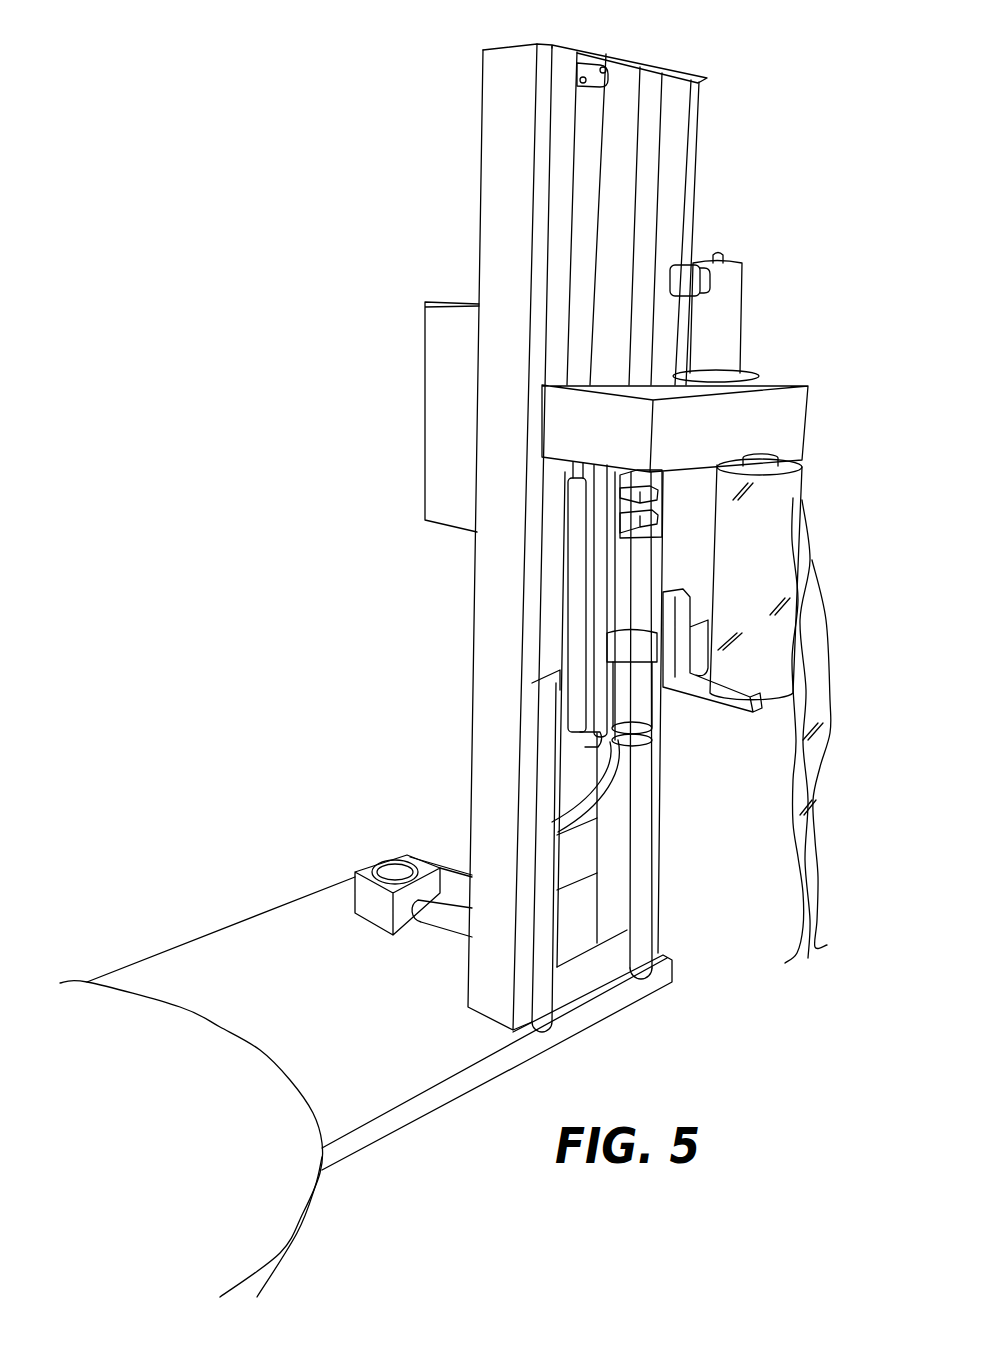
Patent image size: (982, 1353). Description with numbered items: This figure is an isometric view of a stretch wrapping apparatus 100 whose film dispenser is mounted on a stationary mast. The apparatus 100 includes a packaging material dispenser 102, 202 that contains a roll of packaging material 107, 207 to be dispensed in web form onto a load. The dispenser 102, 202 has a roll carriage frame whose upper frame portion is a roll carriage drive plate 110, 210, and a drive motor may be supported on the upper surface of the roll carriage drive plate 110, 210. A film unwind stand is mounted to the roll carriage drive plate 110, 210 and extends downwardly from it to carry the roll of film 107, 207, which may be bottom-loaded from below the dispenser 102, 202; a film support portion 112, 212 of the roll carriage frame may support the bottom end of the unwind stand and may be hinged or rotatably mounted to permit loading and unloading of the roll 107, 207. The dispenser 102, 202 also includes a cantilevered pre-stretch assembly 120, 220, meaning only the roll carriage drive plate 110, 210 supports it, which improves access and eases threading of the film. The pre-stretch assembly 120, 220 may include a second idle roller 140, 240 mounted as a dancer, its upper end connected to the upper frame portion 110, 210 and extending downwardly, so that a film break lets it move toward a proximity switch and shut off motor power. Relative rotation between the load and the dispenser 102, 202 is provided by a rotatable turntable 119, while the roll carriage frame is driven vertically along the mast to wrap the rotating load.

The apparatus 100 is at (378, 310).
The packaging material dispenser 102 is at (578, 607).
The packaging material dispenser 202 is at (758, 192).
The roll carriage drive plate 110 is at (675, 363).
The roll carriage drive plate 210 is at (783, 443).
The roll of packaging material 107 is at (770, 708).
The roll of packaging material 207 is at (778, 594).
The second idle roller 140 is at (472, 604).
The second idle roller 240 is at (567, 610).
The film support portion 112 is at (714, 699).
The film support portion 212 is at (695, 700).
The cantilevered pre-stretch assembly 120 is at (640, 679).
The cantilevered pre-stretch assembly 220 is at (593, 763).
The rotatable turntable 119 is at (203, 1089).